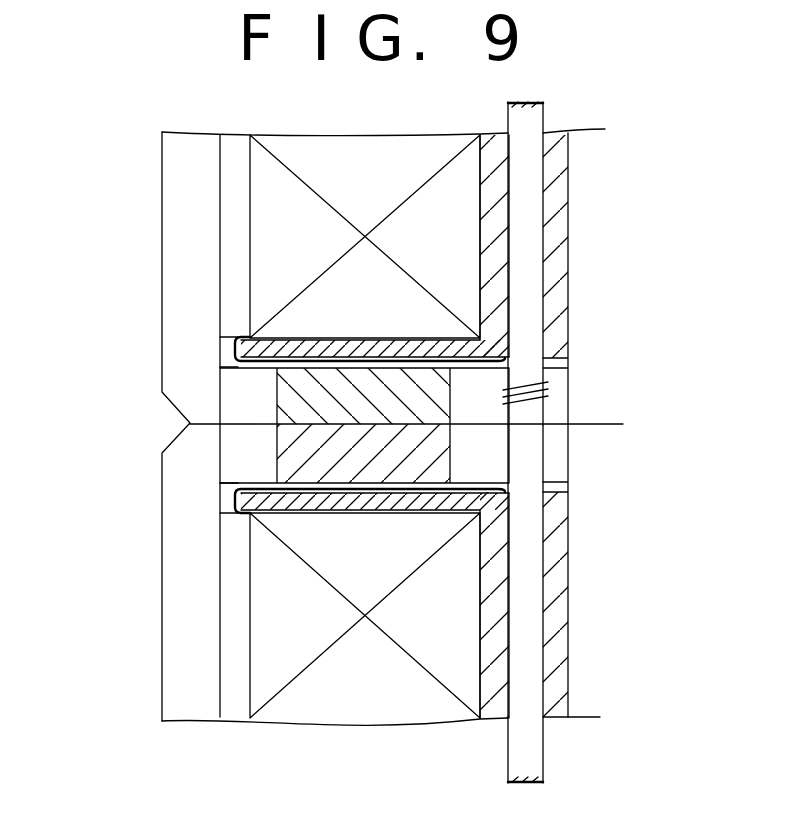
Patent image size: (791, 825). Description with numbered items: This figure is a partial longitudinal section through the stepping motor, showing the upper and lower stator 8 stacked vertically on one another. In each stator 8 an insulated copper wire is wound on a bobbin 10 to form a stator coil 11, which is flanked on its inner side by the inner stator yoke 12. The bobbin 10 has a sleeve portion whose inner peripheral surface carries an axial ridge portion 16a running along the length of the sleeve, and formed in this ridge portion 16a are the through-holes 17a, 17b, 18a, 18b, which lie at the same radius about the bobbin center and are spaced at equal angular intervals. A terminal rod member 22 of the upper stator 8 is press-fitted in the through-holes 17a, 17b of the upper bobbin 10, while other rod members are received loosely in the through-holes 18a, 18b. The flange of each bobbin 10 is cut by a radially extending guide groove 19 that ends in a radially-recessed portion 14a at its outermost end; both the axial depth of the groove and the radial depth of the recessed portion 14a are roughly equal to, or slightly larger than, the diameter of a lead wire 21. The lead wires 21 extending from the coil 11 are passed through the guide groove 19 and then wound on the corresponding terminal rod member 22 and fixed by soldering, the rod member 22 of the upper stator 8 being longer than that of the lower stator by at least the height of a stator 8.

The stator 8 is at (150, 243).
The bobbin 10 is at (497, 135).
The stator coil 11 is at (413, 142).
The inner stator yoke 12 is at (174, 331).
The radially-recessed portion 14a is at (233, 347).
The axial ridge portion 16a is at (567, 232).
The through-hole 17a is at (545, 260).
The through-hole 17b is at (621, 263).
The through-hole 18a is at (616, 604).
The through-hole 18b is at (543, 598).
The guide groove 19 is at (243, 367).
The lead wire 21 is at (240, 357).
The terminal rod member 22 is at (533, 337).